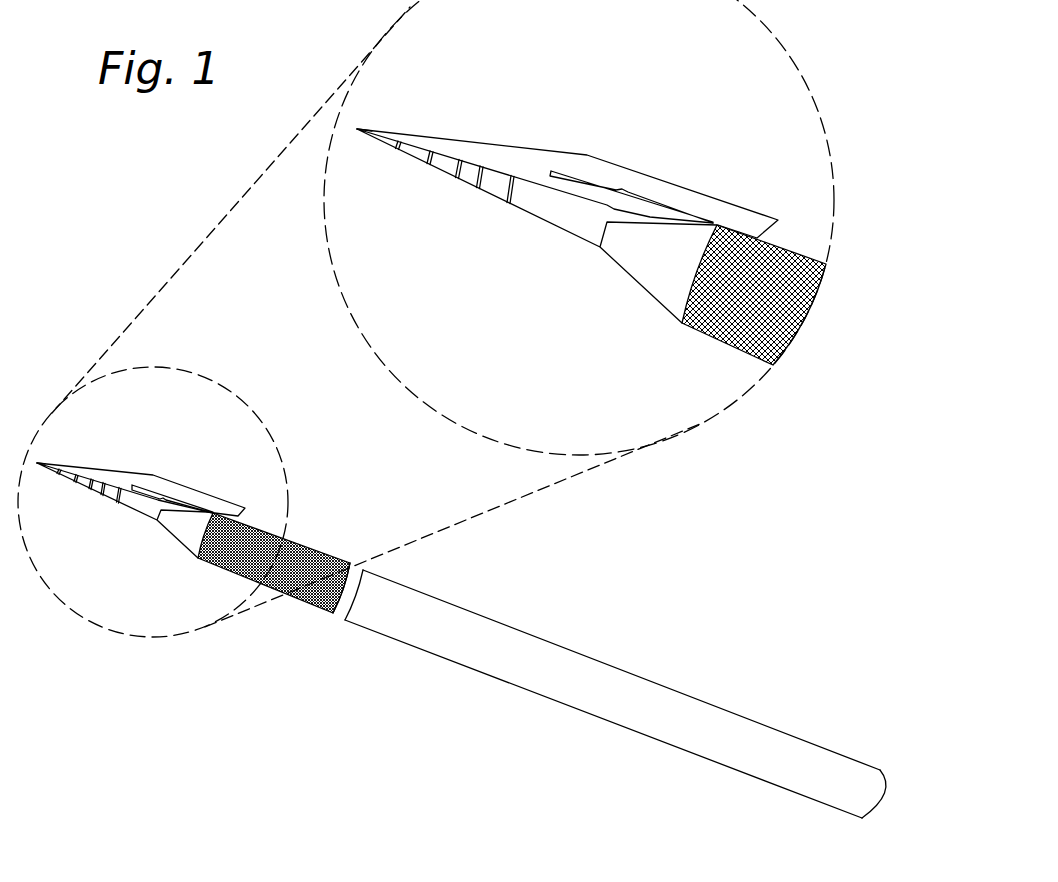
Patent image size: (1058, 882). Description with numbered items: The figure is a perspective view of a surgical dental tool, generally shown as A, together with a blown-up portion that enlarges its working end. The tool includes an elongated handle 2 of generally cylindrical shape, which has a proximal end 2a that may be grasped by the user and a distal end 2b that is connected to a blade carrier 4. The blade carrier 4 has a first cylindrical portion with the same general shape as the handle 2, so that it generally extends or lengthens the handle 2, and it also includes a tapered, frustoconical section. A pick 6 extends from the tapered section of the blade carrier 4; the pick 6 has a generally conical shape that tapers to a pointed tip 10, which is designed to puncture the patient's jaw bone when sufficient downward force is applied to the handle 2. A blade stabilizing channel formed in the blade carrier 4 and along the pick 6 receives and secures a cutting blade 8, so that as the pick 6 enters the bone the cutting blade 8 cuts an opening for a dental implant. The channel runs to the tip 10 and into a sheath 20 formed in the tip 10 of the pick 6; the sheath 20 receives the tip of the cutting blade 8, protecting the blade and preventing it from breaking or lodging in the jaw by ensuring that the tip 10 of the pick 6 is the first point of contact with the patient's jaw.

The handle 2 is at (704, 690).
The proximal end 2a is at (881, 770).
The distal end 2b is at (367, 572).
The blade carrier 4 is at (300, 528).
The pick 6 is at (105, 504).
The cutting blade 8 is at (185, 484).
The pointed tip 10 is at (38, 478).
The sheath 20 is at (37, 461).
The surgical dental tool A is at (340, 643).